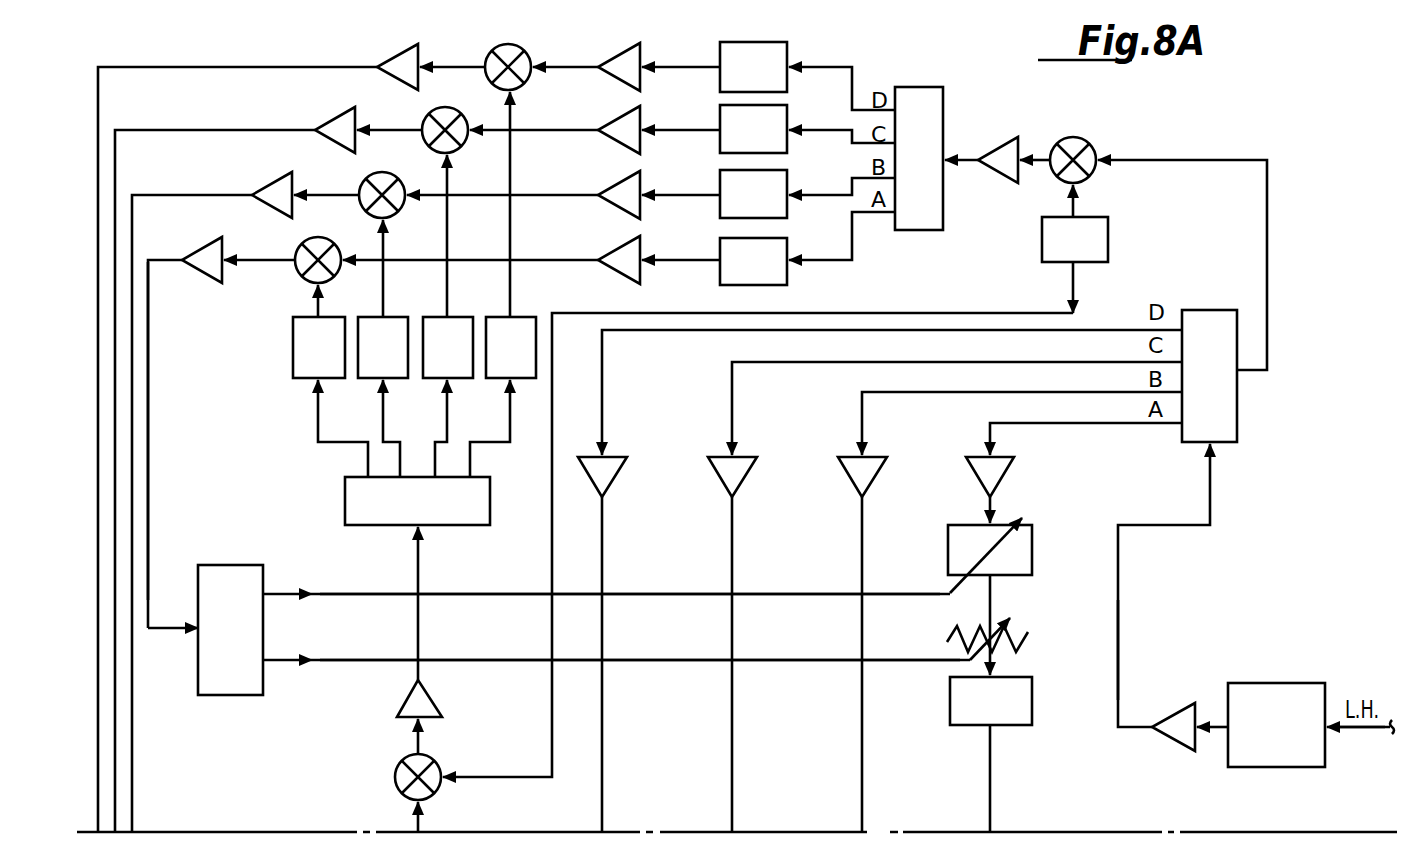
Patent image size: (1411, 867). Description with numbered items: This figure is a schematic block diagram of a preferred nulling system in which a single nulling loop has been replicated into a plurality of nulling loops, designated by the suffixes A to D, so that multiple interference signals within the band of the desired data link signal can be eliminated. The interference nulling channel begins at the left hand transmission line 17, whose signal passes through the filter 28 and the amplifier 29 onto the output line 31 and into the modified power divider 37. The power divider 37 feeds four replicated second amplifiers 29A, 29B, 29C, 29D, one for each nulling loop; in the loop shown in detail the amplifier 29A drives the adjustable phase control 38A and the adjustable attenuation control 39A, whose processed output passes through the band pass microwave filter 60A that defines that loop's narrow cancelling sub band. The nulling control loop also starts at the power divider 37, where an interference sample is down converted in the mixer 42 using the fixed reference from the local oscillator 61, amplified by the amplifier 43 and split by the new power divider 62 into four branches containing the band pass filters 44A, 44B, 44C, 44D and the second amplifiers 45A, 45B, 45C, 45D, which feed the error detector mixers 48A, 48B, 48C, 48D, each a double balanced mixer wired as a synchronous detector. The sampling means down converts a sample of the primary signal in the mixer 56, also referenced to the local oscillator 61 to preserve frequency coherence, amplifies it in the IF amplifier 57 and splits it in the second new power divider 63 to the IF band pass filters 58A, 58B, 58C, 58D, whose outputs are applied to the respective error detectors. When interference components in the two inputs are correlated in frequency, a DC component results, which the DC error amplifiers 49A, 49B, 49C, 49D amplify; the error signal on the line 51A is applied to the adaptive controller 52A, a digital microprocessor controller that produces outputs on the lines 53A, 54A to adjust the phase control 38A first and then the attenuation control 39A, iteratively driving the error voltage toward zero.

The transmission line 17 is at (1360, 729).
The filter 28 is at (1277, 683).
The amplifier 29 is at (1172, 703).
The amplifier 29A is at (1013, 464).
The amplifier 29B is at (881, 464).
The amplifier 29C is at (751, 464).
The amplifier 29D is at (622, 464).
The output line 31 is at (1120, 624).
The power divider 37 is at (1237, 418).
The adjustable phase control 38A is at (948, 550).
The adjustable attenuation control 39A is at (1033, 638).
The down converter mixer 42 is at (1088, 142).
The amplifier 43 is at (1006, 174).
The band pass filter 44A is at (788, 284).
The band pass filter 44B is at (788, 176).
The band pass filter 44C is at (788, 112).
The band pass filter 44D is at (789, 45).
The second amplifier 45A is at (645, 274).
The second amplifier 45B is at (644, 180).
The second amplifier 45C is at (644, 115).
The second amplifier 45D is at (644, 50).
The error detector mixer 48A is at (300, 249).
The error detector mixer 48B is at (365, 182).
The error detector mixer 48C is at (428, 116).
The error detector mixer 48D is at (525, 53).
The DC error amplifier 49A is at (204, 254).
The DC error amplifier 49B is at (266, 190).
The DC error amplifier 49C is at (330, 124).
The DC error amplifier 49D is at (392, 62).
The line 51A is at (152, 472).
The adaptive controller 52A is at (225, 565).
The line 53A is at (364, 592).
The line 54A is at (366, 658).
The down converter mixer 56 is at (395, 777).
The IF amplifier 57 is at (398, 705).
The IF band pass filter 58A is at (300, 379).
The IF band pass filter 58B is at (374, 379).
The IF band pass filter 58C is at (437, 379).
The IF band pass filter 58D is at (500, 379).
The band pass microwave filter 60A is at (949, 706).
The local oscillator 61 is at (1108, 247).
The power divider 62 is at (918, 87).
The power divider 63 is at (345, 500).